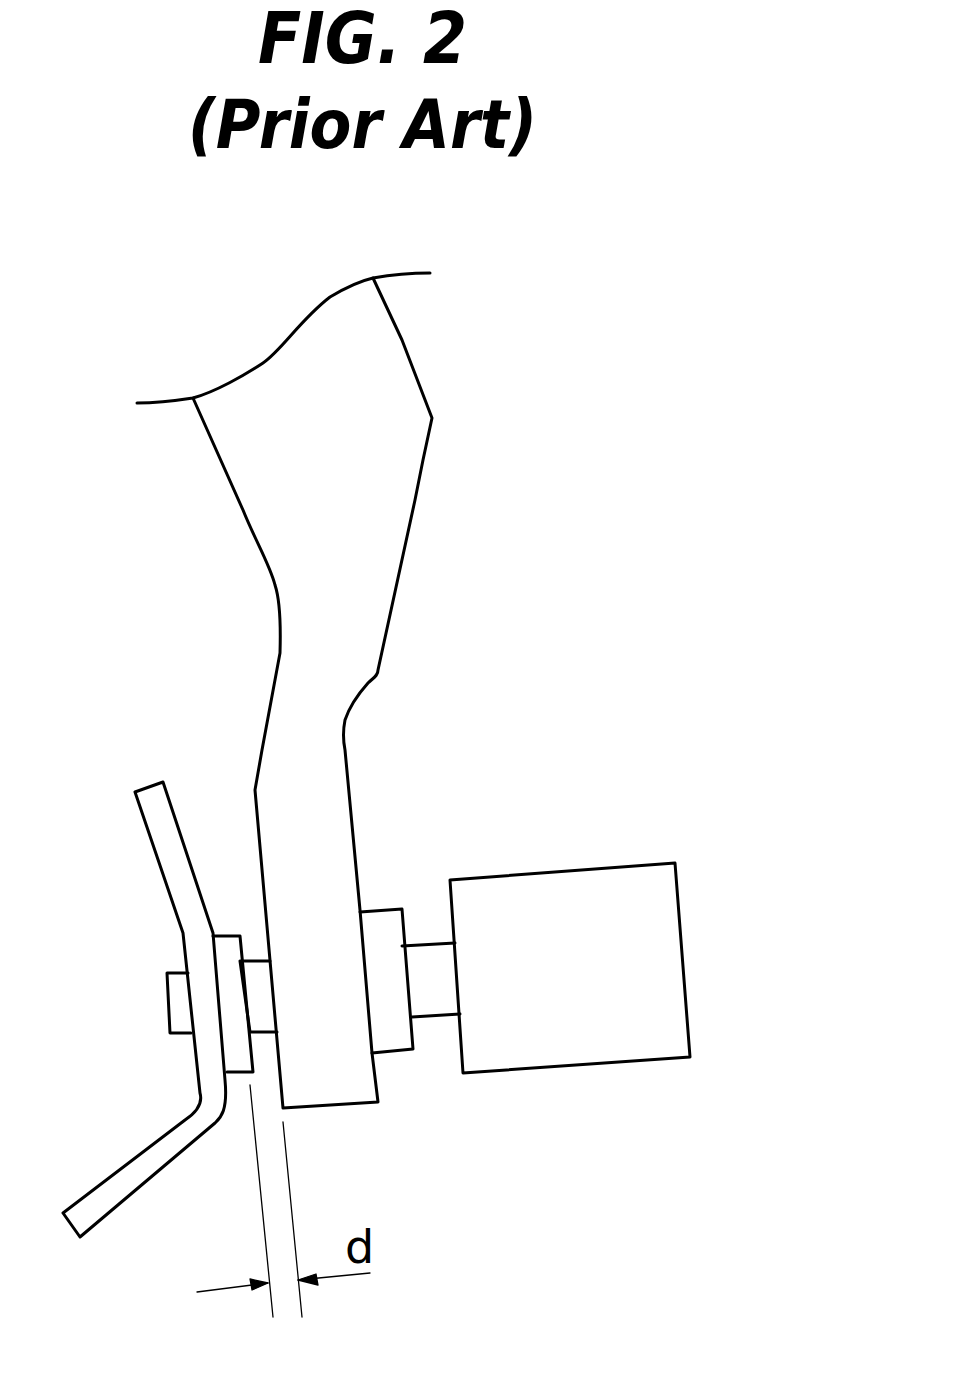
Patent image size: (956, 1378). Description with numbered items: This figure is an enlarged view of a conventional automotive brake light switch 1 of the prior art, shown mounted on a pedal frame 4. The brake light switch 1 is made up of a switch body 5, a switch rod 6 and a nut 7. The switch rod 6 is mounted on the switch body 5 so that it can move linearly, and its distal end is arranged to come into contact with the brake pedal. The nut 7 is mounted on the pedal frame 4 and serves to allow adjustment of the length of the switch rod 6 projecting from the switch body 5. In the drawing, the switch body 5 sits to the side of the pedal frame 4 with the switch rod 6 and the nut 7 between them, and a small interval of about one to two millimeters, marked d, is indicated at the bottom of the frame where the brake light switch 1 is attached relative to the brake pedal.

The brake light switch 1 is at (548, 932).
The pedal frame 4 is at (397, 437).
The switch body 5 is at (595, 1033).
The switch rod 6 is at (418, 977).
The nut 7 is at (378, 923).